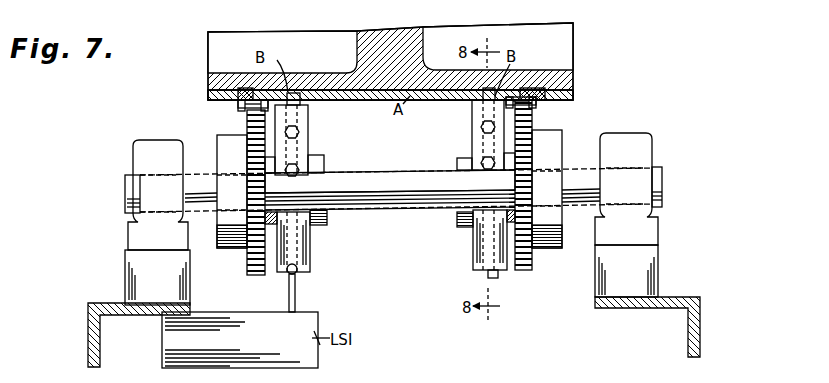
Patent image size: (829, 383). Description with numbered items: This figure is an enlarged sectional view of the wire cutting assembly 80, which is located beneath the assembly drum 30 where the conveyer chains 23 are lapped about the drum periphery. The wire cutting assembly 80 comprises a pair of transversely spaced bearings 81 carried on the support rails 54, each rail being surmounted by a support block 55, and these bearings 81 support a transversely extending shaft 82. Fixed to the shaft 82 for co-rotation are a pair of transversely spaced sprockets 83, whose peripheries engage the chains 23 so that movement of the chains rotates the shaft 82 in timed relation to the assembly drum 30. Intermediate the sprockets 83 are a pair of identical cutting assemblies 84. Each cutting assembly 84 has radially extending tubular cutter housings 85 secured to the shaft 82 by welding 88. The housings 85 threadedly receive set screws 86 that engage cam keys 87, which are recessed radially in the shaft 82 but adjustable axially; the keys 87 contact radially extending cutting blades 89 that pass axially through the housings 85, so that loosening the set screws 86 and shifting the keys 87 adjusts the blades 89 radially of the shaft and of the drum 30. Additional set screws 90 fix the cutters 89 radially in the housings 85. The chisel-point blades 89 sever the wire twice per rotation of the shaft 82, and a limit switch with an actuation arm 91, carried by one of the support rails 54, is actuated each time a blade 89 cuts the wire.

The assembly drum 30 is at (431, 46).
The conveyer chain 23 is at (238, 103).
The sprocket 83 is at (222, 150).
The shaft 82 is at (128, 185).
The bearing 81 is at (135, 228).
The wire cutting assembly 80 is at (397, 263).
The support block 55 is at (128, 270).
The support rail 54 is at (133, 313).
The tubular cutter housing 85 is at (307, 138).
The cutting blade 89 is at (292, 93).
The set screw 90 is at (300, 132).
The cutting assembly 84 is at (328, 167).
The set screw 86 is at (309, 166).
The cam key 87 is at (324, 170).
The welding 88 is at (300, 178).
The actuation arm 91 is at (296, 297).